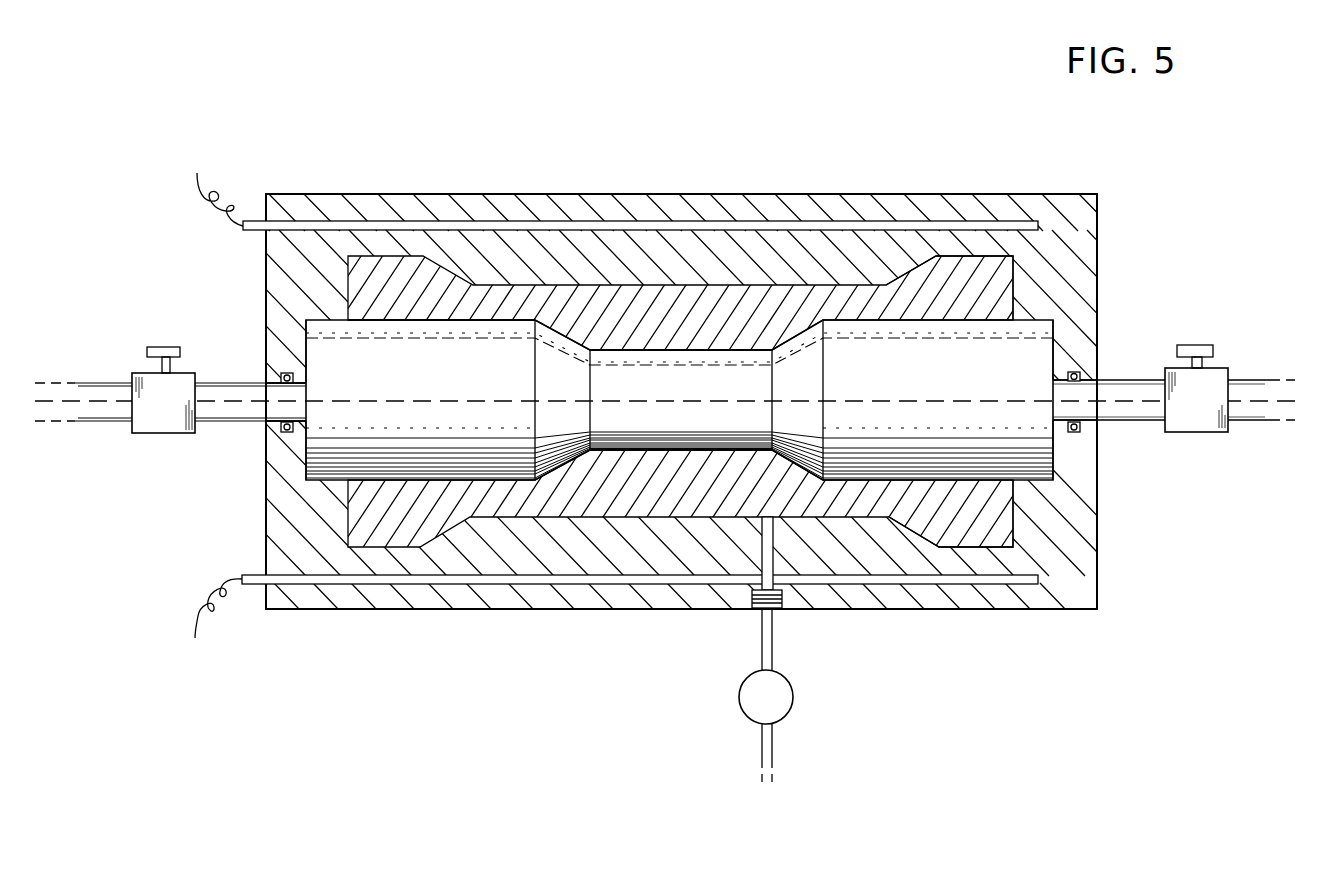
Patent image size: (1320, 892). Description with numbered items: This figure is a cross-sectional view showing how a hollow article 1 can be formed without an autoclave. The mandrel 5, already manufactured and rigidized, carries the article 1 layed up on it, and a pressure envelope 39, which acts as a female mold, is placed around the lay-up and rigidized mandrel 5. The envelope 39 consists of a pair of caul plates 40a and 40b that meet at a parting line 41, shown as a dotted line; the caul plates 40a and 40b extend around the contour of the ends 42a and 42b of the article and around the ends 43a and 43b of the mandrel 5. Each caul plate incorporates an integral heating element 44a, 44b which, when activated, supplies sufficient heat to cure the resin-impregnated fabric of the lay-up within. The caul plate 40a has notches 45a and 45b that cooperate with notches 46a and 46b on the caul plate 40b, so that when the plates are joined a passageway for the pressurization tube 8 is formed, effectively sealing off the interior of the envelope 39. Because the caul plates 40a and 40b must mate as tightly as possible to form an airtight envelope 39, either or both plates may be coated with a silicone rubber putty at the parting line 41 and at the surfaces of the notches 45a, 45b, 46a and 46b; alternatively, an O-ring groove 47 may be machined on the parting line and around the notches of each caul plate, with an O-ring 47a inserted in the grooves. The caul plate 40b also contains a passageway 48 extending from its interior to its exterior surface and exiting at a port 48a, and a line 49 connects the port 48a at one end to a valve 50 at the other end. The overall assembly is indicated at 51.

The hollow article 1 is at (498, 326).
The mandrel 5 is at (436, 394).
The pressurization tube 8 is at (102, 425).
The pressure envelope 39 is at (320, 175).
The caul plate 40a is at (492, 195).
The caul plate 40b is at (356, 612).
The parting line 41 is at (858, 395).
The end of the article 42a is at (347, 283).
The end of the article 42b is at (1007, 300).
The end of the mandrel 43a is at (305, 333).
The end of the mandrel 43b is at (1053, 468).
The heating element 44a is at (702, 221).
The heating element 44b is at (528, 586).
The notch 45a is at (282, 379).
The notch 45b is at (1087, 383).
The notch 46a is at (260, 422).
The notch 46b is at (1085, 413).
The O-ring groove 47 is at (308, 387).
The O-ring 47a is at (290, 432).
The passageway 48 is at (778, 578).
The port 48a is at (755, 608).
The line 49 is at (772, 660).
The valve 50 is at (793, 697).
The molding apparatus 51 is at (870, 168).